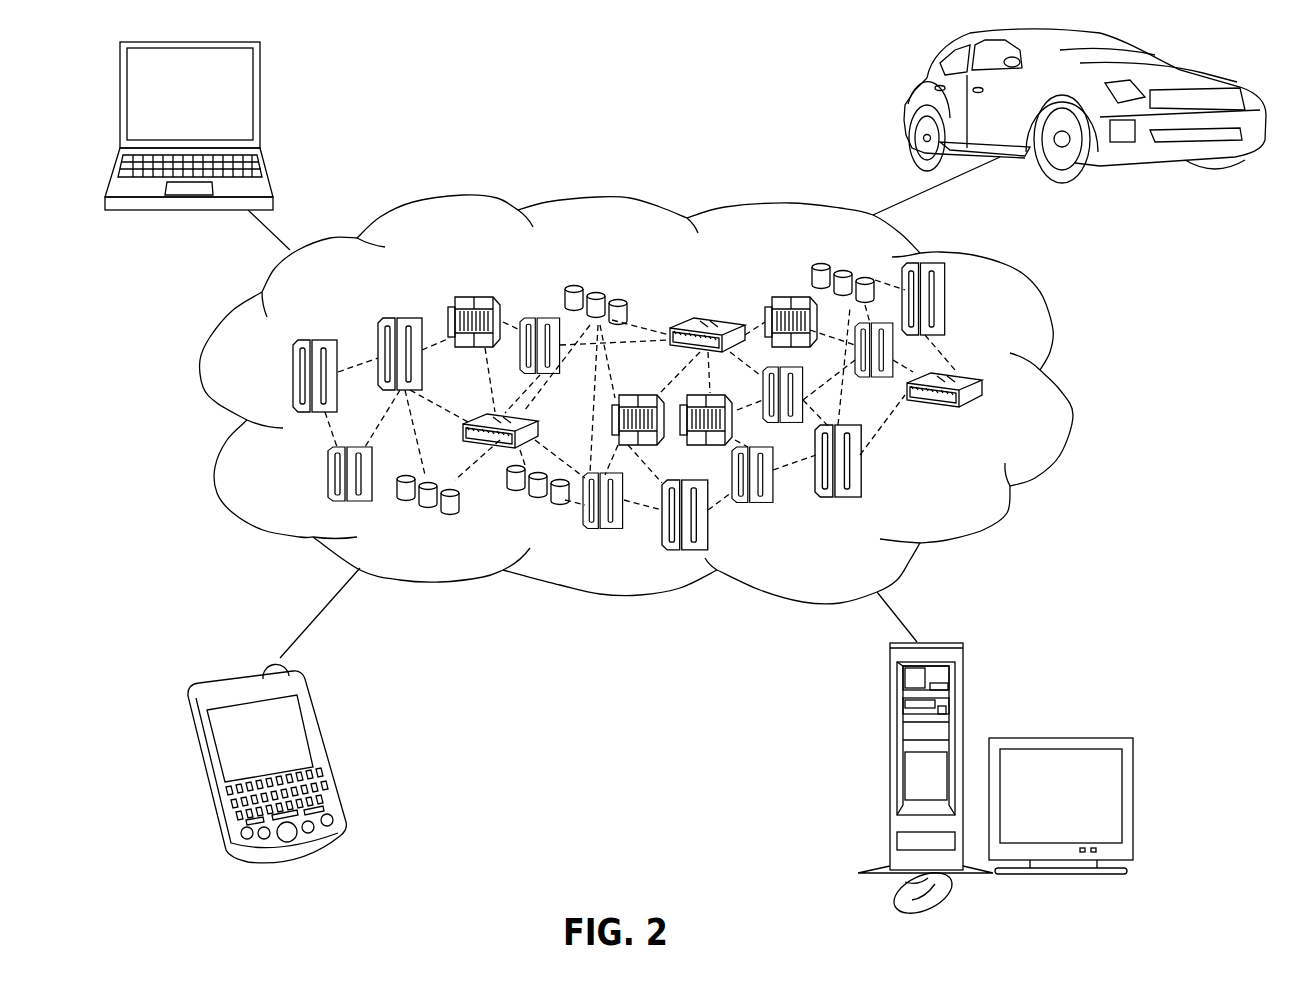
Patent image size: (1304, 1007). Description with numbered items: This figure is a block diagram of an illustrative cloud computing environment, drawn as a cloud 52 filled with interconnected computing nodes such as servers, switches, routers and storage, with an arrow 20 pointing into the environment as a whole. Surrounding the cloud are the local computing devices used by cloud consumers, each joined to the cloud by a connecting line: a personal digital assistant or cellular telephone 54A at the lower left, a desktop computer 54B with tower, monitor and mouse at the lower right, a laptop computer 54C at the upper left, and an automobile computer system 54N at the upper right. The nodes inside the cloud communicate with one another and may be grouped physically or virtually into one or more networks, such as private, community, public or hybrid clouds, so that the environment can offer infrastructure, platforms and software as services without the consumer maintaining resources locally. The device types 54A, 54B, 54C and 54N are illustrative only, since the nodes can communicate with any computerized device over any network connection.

The cloud computing environment 20 is at (667, 399).
The cloud network 52 is at (1060, 388).
The personal digital assistant (PDA) or cellular telephone 54A is at (317, 718).
The desktop computer 54B is at (890, 703).
The laptop computer 54C is at (262, 80).
The automobile computer system 54N is at (903, 97).